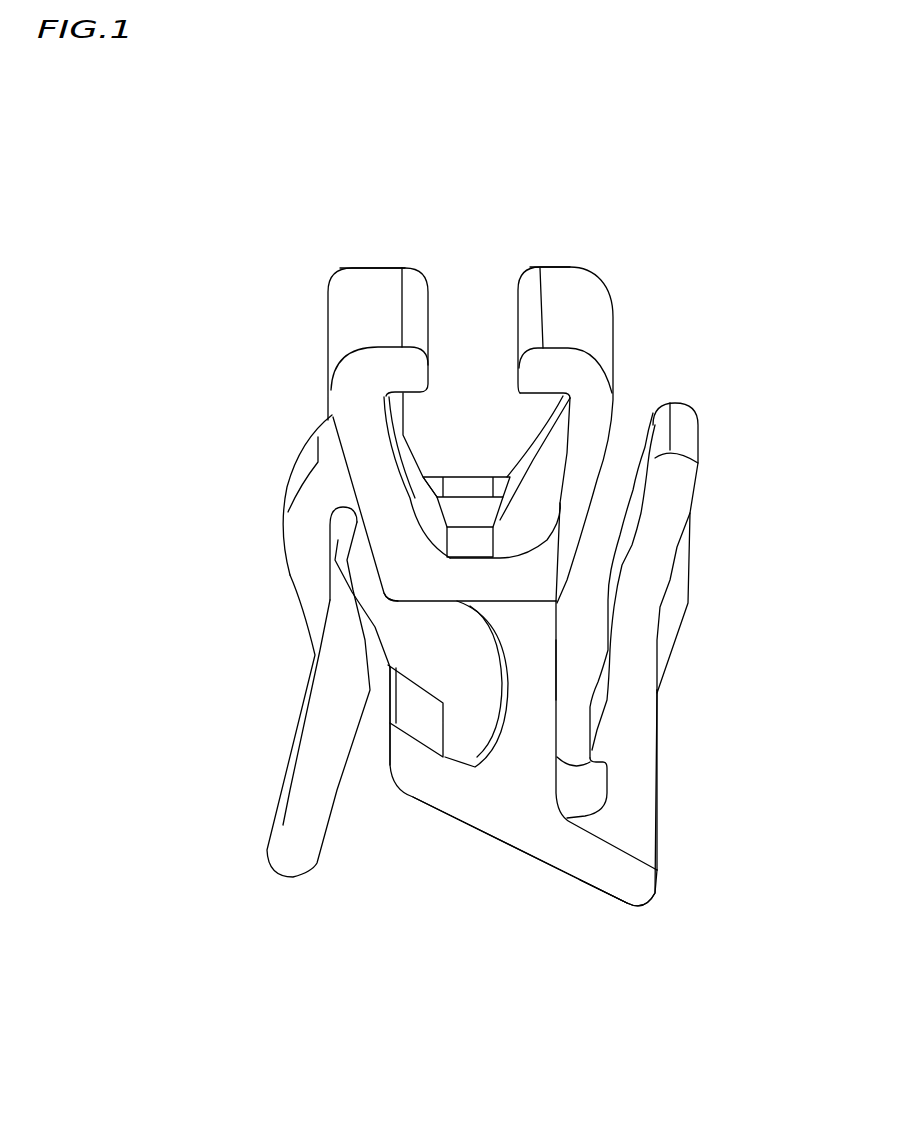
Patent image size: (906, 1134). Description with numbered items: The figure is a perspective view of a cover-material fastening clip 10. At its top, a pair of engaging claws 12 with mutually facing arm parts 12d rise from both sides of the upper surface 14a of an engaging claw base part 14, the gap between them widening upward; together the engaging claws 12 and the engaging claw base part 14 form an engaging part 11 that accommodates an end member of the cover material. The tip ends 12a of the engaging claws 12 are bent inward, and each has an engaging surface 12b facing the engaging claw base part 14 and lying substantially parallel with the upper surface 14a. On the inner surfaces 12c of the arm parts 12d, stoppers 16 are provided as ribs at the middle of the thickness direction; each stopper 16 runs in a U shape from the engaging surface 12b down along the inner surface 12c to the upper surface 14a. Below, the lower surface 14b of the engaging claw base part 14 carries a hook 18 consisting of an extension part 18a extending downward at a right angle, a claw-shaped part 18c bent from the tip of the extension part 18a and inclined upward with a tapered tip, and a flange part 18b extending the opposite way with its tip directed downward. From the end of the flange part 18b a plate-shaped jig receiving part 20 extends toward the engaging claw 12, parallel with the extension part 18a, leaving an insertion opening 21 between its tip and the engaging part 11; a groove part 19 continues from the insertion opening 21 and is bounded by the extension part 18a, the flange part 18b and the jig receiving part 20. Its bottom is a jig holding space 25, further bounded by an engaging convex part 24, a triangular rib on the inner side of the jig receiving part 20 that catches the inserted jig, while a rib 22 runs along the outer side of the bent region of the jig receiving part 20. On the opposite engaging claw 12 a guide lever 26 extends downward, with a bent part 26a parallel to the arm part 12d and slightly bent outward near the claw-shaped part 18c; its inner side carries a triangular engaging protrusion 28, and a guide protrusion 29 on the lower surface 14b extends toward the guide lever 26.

The cover-material fastening clip 10 is at (657, 200).
The engaging part 11 is at (103, 462).
The engaging claws 12 is at (378, 490).
The tip ends 12a is at (388, 288).
The engaging surface 12b is at (400, 393).
The inner surfaces 12c is at (403, 435).
The arm parts 12d is at (372, 462).
The engaging claw base part 14 is at (460, 586).
The upper surface 14a is at (470, 542).
The lower surface 14b is at (377, 652).
The stopper 16 is at (370, 435).
The hook 18 is at (513, 800).
The extension part 18a is at (527, 686).
The flange part 18b is at (587, 852).
The claw-shaped part 18c is at (403, 757).
The groove part 19 is at (578, 630).
The jig receiving part 20 is at (637, 763).
The insertion opening 21 is at (630, 418).
The rib 22 is at (675, 583).
The engaging convex part 24 is at (603, 748).
The jig holding space 25 is at (582, 790).
The guide lever 26 is at (302, 808).
The bent part 26a is at (342, 705).
The engaging protrusion 28 is at (342, 705).
The guide protrusion 29 is at (380, 592).